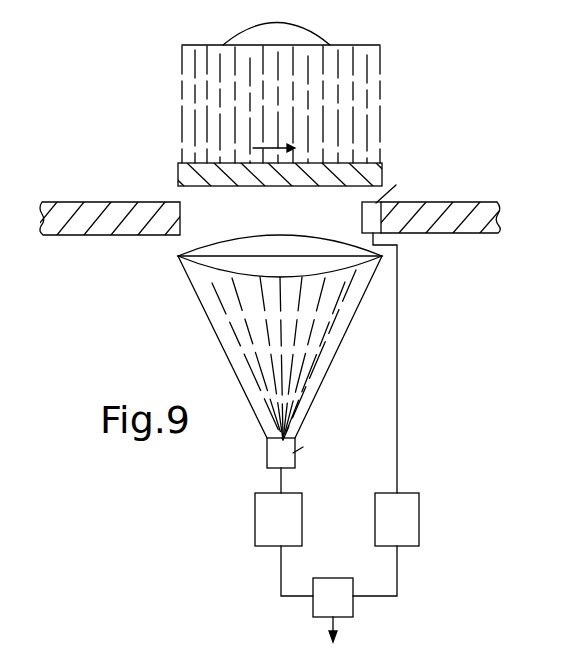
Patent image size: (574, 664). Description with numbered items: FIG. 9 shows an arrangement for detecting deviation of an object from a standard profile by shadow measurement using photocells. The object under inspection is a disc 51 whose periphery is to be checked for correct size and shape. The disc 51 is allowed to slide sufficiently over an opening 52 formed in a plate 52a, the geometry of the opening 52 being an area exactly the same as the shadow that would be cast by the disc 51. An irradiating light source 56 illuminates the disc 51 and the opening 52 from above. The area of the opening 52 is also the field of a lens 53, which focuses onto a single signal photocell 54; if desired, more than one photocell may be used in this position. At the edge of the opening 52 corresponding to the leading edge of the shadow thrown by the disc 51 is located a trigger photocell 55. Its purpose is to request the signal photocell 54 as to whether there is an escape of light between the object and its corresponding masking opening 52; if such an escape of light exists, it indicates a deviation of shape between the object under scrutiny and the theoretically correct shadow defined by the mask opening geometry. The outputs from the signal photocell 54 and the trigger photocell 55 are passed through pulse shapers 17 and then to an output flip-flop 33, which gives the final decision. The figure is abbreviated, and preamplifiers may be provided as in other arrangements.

The irradiating light source 56 is at (312, 36).
The disc 51 is at (382, 164).
The opening 52 is at (297, 223).
The plate 52a is at (143, 237).
The trigger photocell 55 is at (377, 222).
The lens 53 is at (200, 262).
The signal photocell 54 is at (267, 459).
The pulse shapers 17 is at (287, 531).
The output flip-flop 33 is at (340, 609).